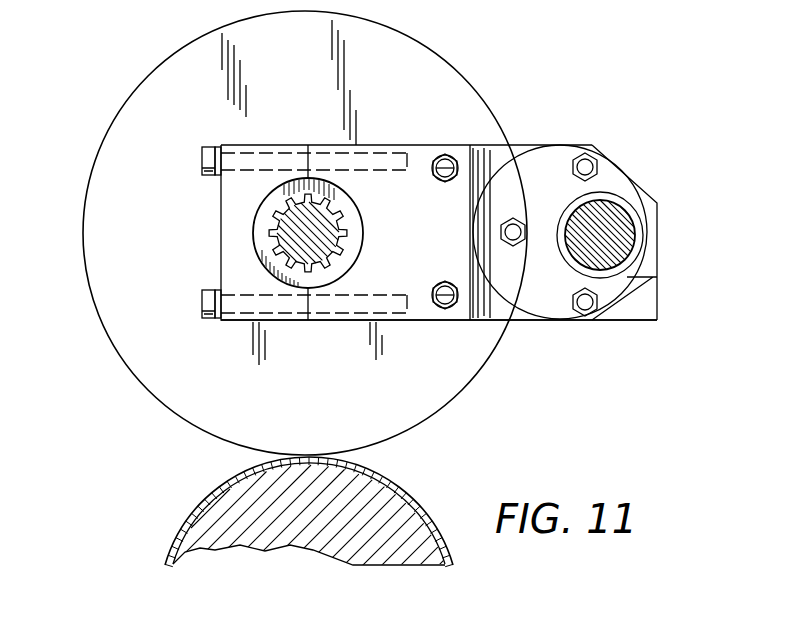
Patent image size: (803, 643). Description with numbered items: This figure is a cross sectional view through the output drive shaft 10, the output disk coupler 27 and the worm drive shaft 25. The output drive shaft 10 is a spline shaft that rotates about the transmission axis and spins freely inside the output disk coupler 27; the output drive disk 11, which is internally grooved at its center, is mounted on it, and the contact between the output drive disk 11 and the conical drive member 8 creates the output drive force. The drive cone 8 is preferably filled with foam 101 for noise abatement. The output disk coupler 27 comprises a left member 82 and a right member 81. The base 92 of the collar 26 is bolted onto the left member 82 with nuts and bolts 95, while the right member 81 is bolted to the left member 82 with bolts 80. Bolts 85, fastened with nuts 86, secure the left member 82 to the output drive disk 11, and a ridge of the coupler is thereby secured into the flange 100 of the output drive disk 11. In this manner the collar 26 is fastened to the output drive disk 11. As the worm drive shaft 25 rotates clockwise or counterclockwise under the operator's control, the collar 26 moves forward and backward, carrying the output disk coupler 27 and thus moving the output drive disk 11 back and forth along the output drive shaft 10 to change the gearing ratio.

The output drive disk 11 is at (153, 70).
The left member 82 is at (353, 145).
The output disk coupler 27 is at (332, 332).
The right member 81 is at (263, 145).
The bolts 80 is at (198, 162).
The output drive shaft 10 is at (273, 223).
The flange 100 is at (273, 205).
The nuts 86 is at (430, 155).
The bolts 85 is at (458, 152).
The base 92 is at (540, 170).
The collar 26 is at (615, 190).
The nuts and bolts 95 is at (516, 245).
The worm drive shaft 25 is at (607, 230).
The conical drive member 8 is at (400, 490).
The foam 101 is at (240, 502).